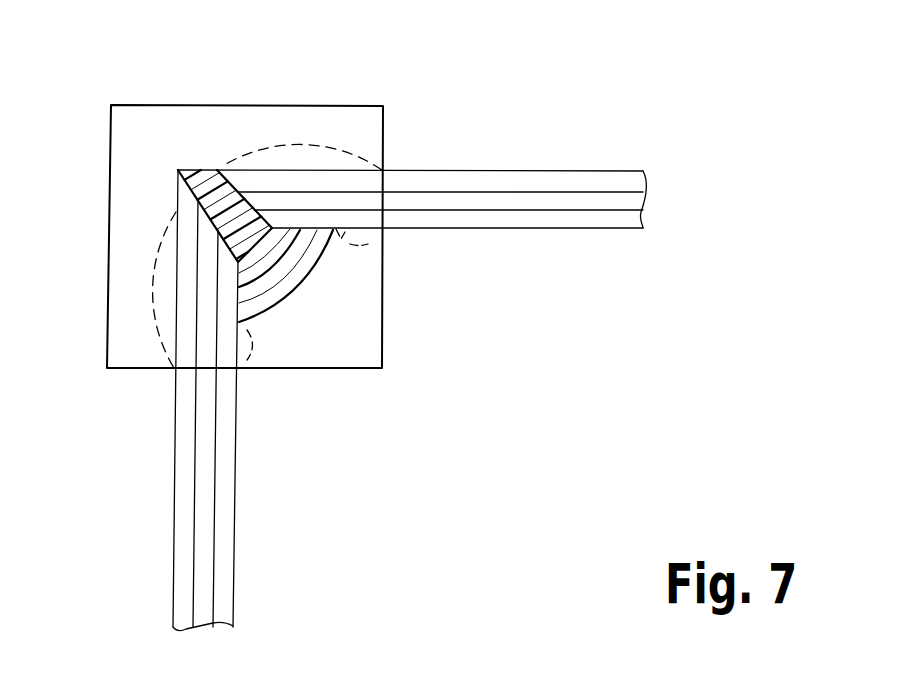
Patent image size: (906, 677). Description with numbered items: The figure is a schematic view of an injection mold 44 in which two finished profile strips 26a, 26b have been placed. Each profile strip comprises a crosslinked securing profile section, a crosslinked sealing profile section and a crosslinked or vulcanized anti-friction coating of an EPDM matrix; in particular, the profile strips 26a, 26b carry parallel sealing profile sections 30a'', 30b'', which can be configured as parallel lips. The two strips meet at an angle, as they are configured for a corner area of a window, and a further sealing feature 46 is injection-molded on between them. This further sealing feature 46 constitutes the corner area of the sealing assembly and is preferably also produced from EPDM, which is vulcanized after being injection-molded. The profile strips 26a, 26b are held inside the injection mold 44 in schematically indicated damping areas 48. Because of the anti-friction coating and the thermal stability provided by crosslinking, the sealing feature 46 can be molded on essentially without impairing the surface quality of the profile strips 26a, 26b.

The injection mold 44 is at (349, 101).
The further sealing feature 46 is at (207, 190).
The damping area 48 is at (300, 147).
The profile strip 26a is at (185, 490).
The profile strip 26b is at (506, 178).
The parallel sealing profile section 30a'' is at (440, 251).
The parallel sealing profile section 30b'' is at (457, 260).